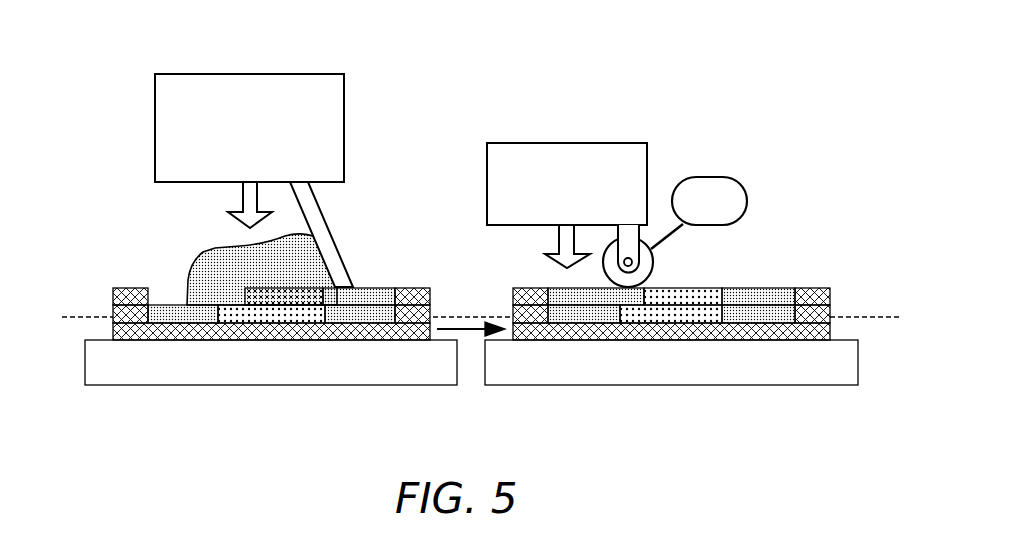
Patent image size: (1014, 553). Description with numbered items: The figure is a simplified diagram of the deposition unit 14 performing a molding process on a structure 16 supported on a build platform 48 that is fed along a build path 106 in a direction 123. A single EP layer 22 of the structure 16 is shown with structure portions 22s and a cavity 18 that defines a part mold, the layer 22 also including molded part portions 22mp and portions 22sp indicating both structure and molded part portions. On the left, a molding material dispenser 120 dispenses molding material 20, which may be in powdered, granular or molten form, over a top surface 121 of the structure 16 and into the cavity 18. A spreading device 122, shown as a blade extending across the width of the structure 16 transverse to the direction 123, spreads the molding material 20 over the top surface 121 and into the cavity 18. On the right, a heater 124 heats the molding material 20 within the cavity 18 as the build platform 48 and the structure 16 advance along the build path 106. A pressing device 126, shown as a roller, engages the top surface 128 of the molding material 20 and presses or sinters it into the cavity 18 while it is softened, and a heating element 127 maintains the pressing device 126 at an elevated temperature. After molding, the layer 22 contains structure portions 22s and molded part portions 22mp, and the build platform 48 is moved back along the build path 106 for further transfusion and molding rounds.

The deposition unit 14 is at (697, 69).
The structure 16 is at (106, 209).
The cavity 18 is at (168, 291).
The molding material 20 is at (212, 272).
The EP layer 22 is at (113, 300).
The structure portion 22s is at (125, 290).
The molded part portion 22mp is at (370, 295).
The structure and molded part portions 22sp is at (295, 296).
The build platform 48 is at (100, 372).
The build path 106 is at (856, 316).
The molding material dispenser 120 is at (178, 80).
The top surface 121 is at (816, 285).
The spreading device 122 is at (325, 212).
The direction 123 is at (473, 330).
The heater 124 is at (512, 146).
The pressing device 126 is at (653, 264).
The heating element 127 is at (723, 180).
The top surface of the molding material 128 is at (770, 285).